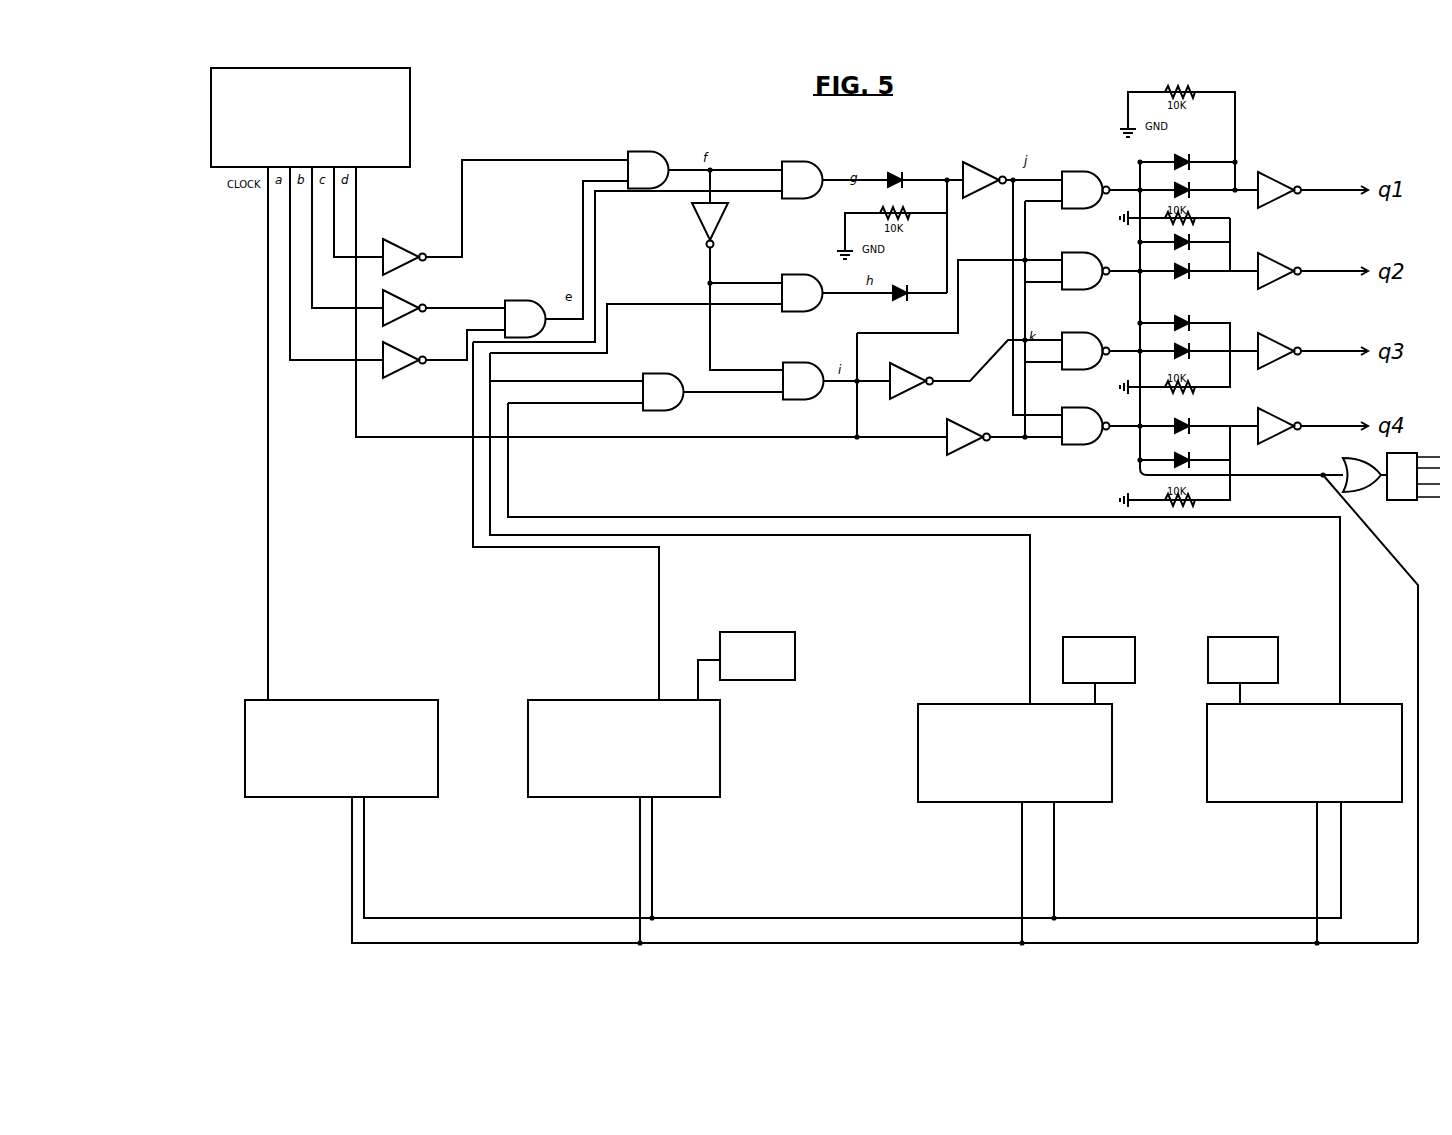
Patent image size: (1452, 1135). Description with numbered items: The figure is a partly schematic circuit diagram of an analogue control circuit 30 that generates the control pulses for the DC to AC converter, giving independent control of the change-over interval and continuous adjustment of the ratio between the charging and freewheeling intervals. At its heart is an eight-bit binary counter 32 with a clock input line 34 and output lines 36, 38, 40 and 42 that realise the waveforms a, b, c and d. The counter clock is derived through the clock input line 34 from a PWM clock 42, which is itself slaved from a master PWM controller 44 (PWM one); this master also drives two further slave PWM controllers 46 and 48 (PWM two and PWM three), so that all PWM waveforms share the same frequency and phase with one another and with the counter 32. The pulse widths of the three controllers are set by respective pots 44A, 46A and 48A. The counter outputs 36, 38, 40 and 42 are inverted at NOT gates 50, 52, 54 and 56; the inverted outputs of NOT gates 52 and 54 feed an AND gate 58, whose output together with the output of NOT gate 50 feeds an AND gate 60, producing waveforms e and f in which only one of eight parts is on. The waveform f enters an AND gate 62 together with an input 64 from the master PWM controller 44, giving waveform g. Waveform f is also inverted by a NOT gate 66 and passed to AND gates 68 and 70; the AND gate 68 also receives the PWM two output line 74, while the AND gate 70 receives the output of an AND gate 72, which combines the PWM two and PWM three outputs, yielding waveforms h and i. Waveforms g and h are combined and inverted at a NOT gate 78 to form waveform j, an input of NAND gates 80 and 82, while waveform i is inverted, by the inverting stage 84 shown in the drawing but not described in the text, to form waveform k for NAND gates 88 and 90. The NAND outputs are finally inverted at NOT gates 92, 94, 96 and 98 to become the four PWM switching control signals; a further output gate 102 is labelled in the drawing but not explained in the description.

The analogue control circuit 30 is at (250, 553).
The binary counter 32 is at (412, 116).
The clock input line 34 is at (268, 240).
The output line 36 is at (290, 268).
The output line 38 is at (312, 286).
The output line 40 is at (334, 192).
The PWM clock 42 is at (356, 206).
The master PWM controller 44 is at (600, 700).
The pot 44A is at (797, 655).
The PWM controller 46 is at (955, 704).
The pot 46A is at (1100, 637).
The PWM controller 48 is at (1375, 704).
The pot 48A is at (1240, 637).
The NOT gate 50 is at (405, 268).
The NOT gate 52 is at (405, 316).
The NOT gate 54 is at (406, 373).
The NOT gate 56 is at (965, 450).
The AND gate 58 is at (541, 314).
The AND gate 60 is at (660, 160).
The AND gate 62 is at (815, 177).
The input 64 is at (778, 194).
The NOT gate 66 is at (700, 225).
The AND gate 68 is at (814, 308).
The AND gate 70 is at (800, 388).
The AND gate 72 is at (675, 398).
The PWM2 output line 74 is at (850, 547).
The NOT gate 78 is at (980, 194).
The NAND gate 80 is at (1060, 171).
The NAND gate 82 is at (1060, 408).
The inverter U4F 84 is at (903, 390).
The NAND gate 88 is at (1060, 251).
The NAND gate 90 is at (1060, 332).
The NOT gate 92 is at (1283, 188).
The NOT gate 94 is at (1283, 269).
The NOT gate 96 is at (1283, 349).
The NOT gate 98 is at (1283, 424).
The OR gate U6A connector 102 is at (1372, 497).